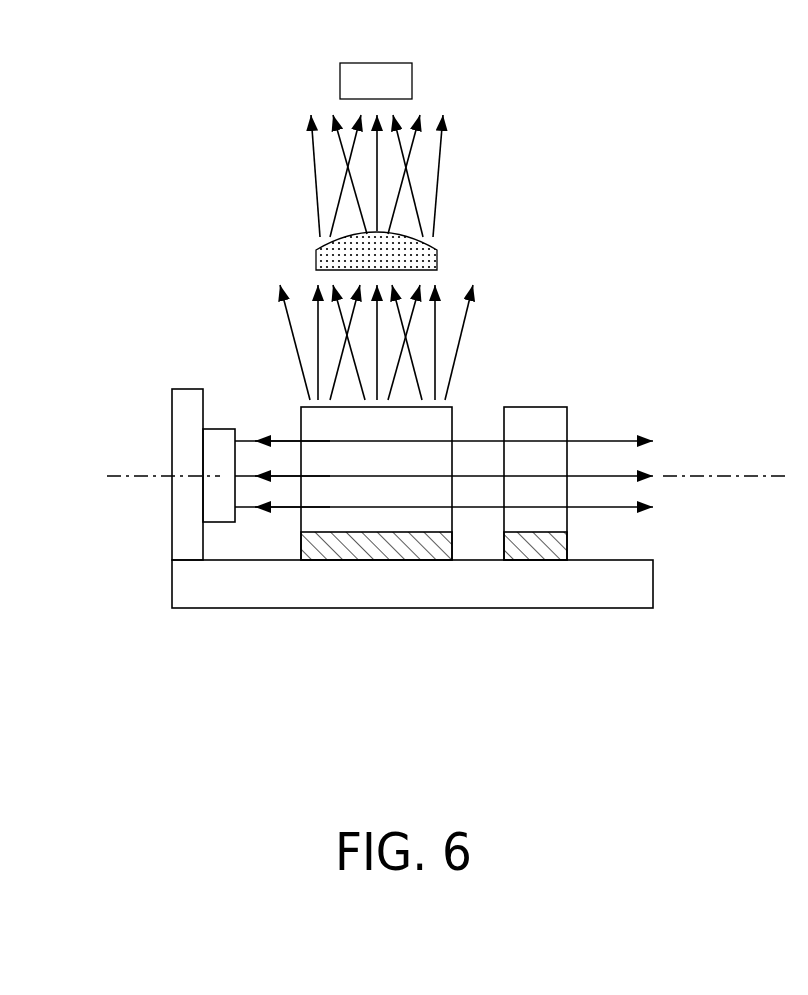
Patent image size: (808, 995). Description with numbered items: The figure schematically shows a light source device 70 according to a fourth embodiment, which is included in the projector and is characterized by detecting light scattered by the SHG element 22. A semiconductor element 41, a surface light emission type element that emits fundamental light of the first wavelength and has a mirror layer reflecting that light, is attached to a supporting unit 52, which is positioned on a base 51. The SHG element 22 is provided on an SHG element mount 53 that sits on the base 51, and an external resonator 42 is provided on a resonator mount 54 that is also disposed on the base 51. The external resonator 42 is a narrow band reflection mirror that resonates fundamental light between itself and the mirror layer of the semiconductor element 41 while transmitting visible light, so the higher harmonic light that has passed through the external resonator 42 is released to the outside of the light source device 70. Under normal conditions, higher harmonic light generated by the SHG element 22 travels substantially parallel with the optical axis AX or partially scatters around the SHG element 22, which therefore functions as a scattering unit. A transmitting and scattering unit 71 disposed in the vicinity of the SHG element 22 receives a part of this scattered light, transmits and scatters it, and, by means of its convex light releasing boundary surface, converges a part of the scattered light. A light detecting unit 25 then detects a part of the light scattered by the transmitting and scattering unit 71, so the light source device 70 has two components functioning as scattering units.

The light source device 70 is at (180, 78).
The light detecting unit 25 is at (405, 82).
The transmitting and scattering unit 71 is at (425, 255).
The SHG element 22 is at (440, 415).
The external resonator 42 is at (543, 427).
The semiconductor element 41 is at (219, 440).
The supporting unit 52 is at (177, 415).
The SHG element mount 53 is at (383, 562).
The resonator mount 54 is at (540, 550).
The base 51 is at (613, 598).
The optical axis AX is at (140, 480).